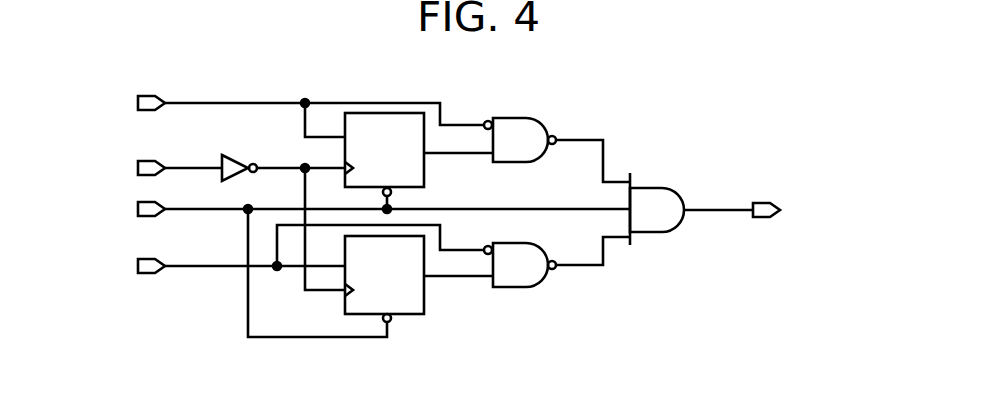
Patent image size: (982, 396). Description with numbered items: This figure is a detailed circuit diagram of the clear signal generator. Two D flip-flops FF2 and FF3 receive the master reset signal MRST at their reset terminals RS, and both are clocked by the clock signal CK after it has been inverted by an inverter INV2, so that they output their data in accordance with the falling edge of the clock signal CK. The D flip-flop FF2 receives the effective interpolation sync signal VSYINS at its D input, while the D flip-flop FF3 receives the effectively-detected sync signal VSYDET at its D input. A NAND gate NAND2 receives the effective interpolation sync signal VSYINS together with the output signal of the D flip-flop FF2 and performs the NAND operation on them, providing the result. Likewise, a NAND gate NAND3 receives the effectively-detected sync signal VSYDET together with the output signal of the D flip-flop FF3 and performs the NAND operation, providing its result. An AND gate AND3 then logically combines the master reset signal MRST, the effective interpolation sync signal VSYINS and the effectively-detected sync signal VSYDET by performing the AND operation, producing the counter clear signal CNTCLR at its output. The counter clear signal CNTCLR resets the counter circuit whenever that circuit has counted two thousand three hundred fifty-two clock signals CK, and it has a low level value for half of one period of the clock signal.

The effective interpolation sync signal VSYINS is at (258, 113).
The clock signal CK is at (215, 222).
The master reset signal MRST is at (336, 262).
The effectively-detected sync signal VSYDET is at (263, 254).
The inverter INV2 is at (236, 156).
The D flip-flop FF2 is at (425, 168).
The D flip-flop FF3 is at (425, 285).
The NAND gate NAND2 is at (565, 92).
The NAND gate NAND3 is at (545, 287).
The AND gate AND3 is at (665, 188).
The counter clear signal CNTCLR is at (779, 214).